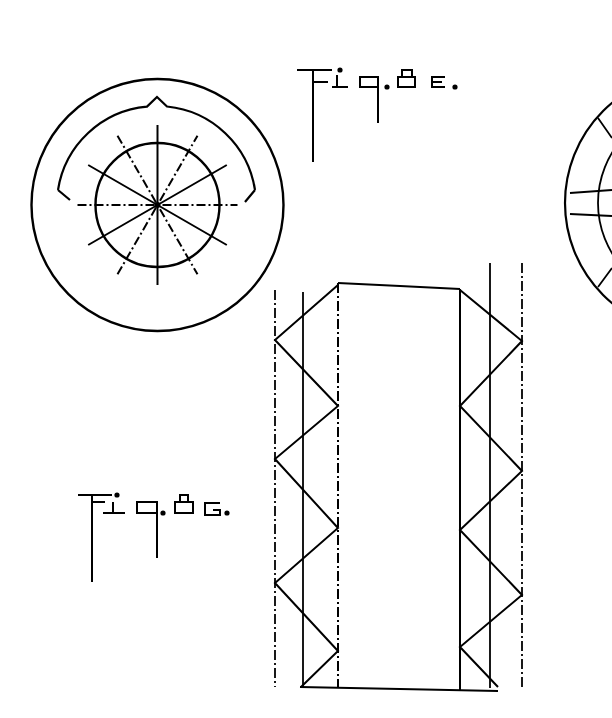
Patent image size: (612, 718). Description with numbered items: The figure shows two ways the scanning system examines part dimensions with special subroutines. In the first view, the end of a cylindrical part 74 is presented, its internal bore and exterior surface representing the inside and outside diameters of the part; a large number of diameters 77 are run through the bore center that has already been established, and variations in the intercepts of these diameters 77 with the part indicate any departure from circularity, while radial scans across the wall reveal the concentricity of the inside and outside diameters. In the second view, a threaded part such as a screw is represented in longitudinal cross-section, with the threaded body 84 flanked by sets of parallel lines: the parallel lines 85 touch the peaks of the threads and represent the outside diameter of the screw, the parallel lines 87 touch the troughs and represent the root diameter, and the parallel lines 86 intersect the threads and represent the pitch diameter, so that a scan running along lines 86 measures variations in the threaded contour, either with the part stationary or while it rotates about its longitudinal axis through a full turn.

In FIG. 8E, the cylindrical part 74 is at (97, 307).
In FIG. 8E, the diameters 77 is at (157, 97).
In FIG. 8G, the central tube 84 is at (408, 287).
In FIG. 8G, the parallel lines 85 is at (523, 368).
In FIG. 8G, the parallel lines 86 is at (493, 413).
In FIG. 8G, the parallel lines 87 is at (460, 447).